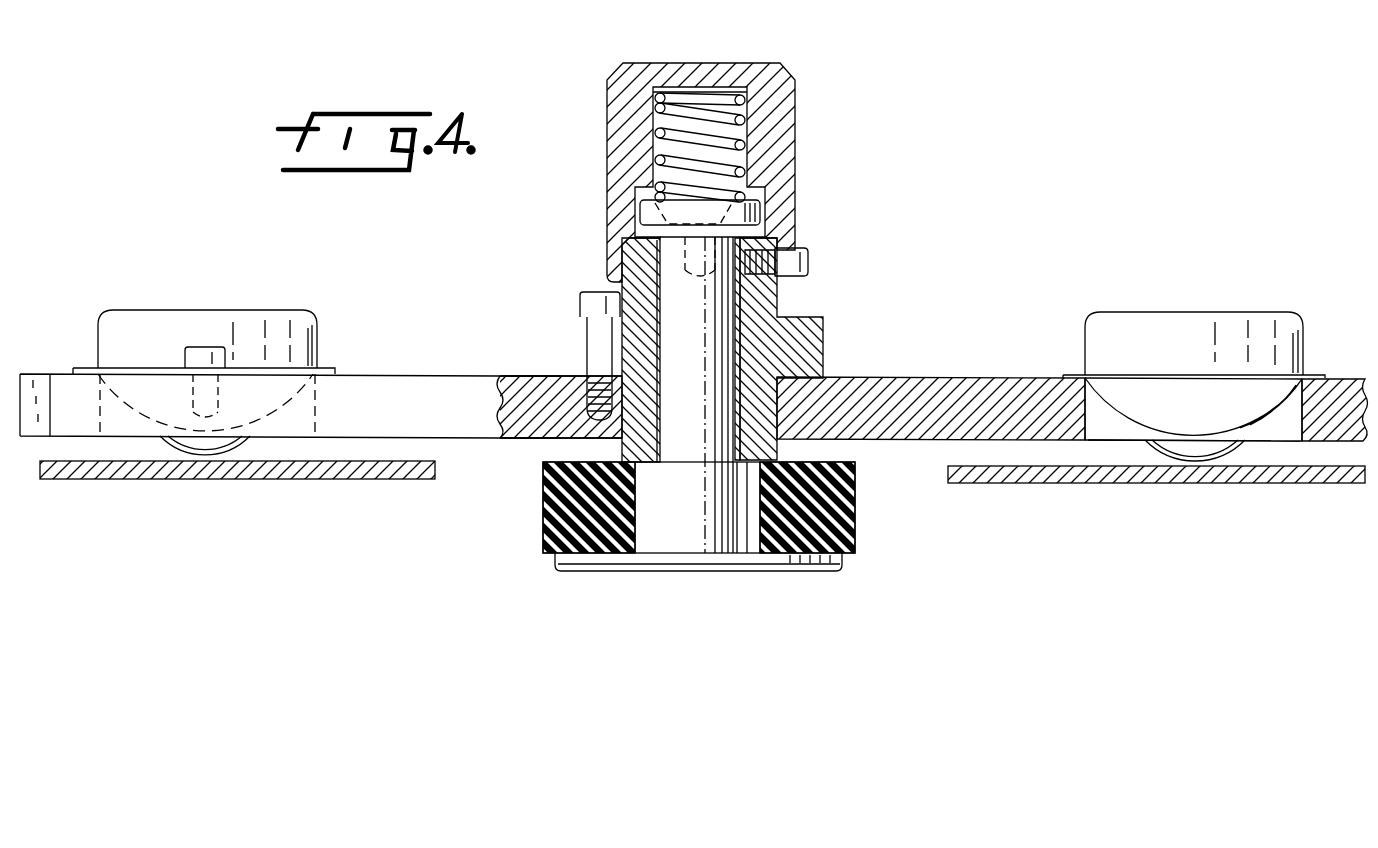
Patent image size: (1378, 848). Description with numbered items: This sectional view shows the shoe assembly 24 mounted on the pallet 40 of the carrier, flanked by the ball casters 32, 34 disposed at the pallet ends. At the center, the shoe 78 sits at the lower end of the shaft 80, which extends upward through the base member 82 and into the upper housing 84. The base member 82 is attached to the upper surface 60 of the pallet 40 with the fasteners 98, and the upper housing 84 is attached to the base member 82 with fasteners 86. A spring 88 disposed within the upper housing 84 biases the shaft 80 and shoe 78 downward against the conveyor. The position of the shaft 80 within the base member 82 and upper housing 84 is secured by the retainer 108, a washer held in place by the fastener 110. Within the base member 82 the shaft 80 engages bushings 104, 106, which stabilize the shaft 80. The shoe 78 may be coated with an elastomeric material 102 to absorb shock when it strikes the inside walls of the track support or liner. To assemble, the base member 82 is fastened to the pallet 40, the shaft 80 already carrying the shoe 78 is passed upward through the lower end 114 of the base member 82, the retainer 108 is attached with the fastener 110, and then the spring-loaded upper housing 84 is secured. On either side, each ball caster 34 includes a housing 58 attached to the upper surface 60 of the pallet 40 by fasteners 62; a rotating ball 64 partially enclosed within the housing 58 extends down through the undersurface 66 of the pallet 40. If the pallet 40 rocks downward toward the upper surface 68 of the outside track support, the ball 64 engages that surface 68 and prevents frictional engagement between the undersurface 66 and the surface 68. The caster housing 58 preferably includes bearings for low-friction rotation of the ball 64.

The shoe assembly 24 is at (823, 82).
The ball caster 32 is at (151, 306).
The ball caster 34 is at (1230, 310).
The pallet 40 is at (980, 378).
The housing 58 is at (205, 290).
The upper surface 60 is at (522, 376).
The fasteners 62 is at (205, 347).
The rotating ball 64 is at (207, 457).
The undersurface 66 is at (520, 440).
The upper surface of the outside track support 68 is at (300, 462).
The shoe 78 is at (681, 574).
The shaft 80 is at (722, 312).
The base member 82 is at (830, 330).
The upper housing 84 is at (711, 63).
The fasteners 86 is at (810, 264).
The spring 88 is at (745, 152).
The fasteners 98 is at (580, 302).
The elastomeric material 102 is at (858, 521).
The bushing 104 is at (742, 378).
The bushing 106 is at (650, 266).
The retainer 108 is at (765, 215).
The fastener 110 is at (640, 220).
The lower end 114 is at (663, 462).